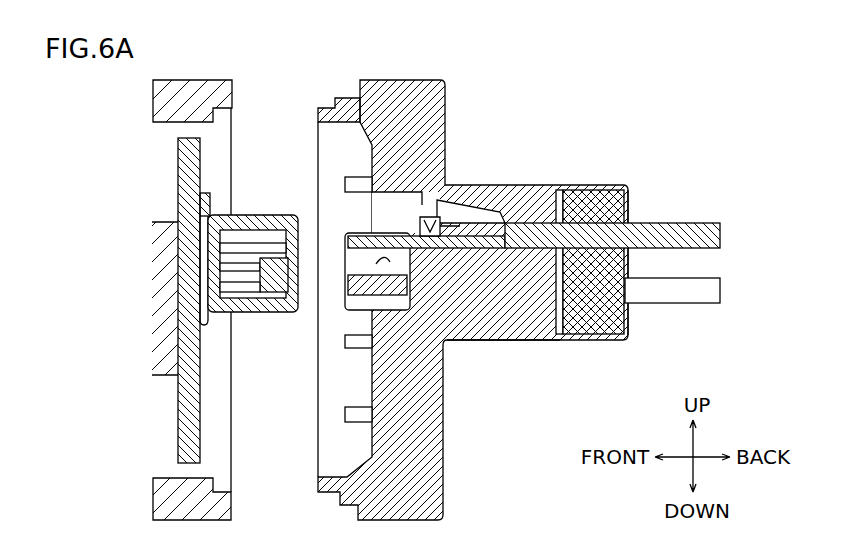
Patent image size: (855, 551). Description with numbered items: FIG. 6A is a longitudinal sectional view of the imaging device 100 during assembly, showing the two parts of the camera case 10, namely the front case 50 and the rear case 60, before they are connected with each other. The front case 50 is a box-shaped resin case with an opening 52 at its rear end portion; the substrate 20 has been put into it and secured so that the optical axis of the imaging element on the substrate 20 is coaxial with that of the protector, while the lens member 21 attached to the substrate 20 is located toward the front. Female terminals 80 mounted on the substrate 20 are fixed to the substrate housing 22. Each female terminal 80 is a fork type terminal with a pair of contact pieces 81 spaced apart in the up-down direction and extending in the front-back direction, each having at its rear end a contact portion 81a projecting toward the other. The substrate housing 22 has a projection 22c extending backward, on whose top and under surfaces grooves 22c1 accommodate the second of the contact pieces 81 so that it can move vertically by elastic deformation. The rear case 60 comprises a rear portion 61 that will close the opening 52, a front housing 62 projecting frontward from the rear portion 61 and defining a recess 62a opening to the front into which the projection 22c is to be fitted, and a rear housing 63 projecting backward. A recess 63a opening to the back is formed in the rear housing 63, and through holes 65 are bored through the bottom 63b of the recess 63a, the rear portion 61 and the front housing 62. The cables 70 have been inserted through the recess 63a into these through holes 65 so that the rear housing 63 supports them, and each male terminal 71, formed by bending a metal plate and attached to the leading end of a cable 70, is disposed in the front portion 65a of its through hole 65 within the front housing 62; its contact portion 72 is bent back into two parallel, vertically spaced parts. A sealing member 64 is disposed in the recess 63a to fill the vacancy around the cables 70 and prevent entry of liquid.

The camera case 10 is at (226, 38).
The front case 50 is at (427, 275).
The opening 52 is at (228, 466).
The substrate 20 is at (178, 415).
The lens member 21 is at (168, 375).
The female terminal 80 is at (198, 221).
The substrate housing 22 is at (427, 275).
The contact piece 81 is at (254, 214).
The contact portion 81a is at (266, 282).
The projection 22c is at (300, 262).
The groove 22c1 is at (240, 303).
The rear case 60 is at (427, 275).
The imaging device 100 is at (427, 275).
The rear portion 61 is at (462, 76).
The front housing 62 is at (345, 326).
The recess 62a is at (383, 258).
The male terminal 71 is at (427, 275).
The contact portion 72 is at (386, 218).
The through hole 65 is at (518, 222).
The front portion 65a is at (458, 185).
The rear housing 63 is at (427, 275).
The recess 63a is at (592, 192).
The bottom 63b is at (499, 300).
The sealing member 64 is at (628, 203).
The cable 70 is at (714, 292).